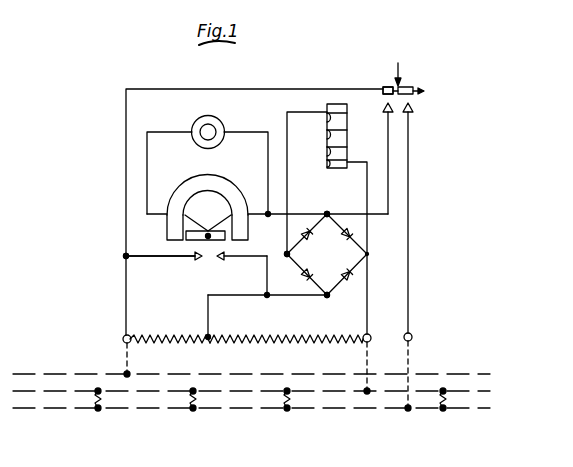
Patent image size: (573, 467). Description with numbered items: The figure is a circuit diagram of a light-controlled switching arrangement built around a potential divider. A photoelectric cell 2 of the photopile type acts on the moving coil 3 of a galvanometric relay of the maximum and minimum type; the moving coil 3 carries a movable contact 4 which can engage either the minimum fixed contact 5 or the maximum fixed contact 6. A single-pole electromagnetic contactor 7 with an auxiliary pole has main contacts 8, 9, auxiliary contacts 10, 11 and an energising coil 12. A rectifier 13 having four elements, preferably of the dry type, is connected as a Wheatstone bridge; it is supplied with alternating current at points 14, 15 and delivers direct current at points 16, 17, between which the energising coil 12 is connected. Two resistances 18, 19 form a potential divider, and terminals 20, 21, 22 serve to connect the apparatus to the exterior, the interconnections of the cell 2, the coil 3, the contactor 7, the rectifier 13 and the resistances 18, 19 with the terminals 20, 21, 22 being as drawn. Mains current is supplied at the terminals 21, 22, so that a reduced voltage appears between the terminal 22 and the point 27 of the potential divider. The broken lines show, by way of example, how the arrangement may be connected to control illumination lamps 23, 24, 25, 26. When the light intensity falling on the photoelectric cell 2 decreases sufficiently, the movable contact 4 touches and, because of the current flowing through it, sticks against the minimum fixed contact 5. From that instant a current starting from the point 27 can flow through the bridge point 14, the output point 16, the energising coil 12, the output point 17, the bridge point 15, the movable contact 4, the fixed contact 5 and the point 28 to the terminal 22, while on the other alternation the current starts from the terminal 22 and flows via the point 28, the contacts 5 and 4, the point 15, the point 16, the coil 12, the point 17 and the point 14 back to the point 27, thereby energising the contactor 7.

The photoelectric cell 2 is at (210, 128).
The moving coil 3 is at (203, 210).
The movable contact 4 is at (207, 240).
The minimum fixed contact 5 is at (196, 259).
The maximum fixed contact 6 is at (222, 259).
The single-pole electromagnetic contactor 7 is at (398, 66).
The main contact 8 is at (412, 88).
The main contact 9 is at (410, 114).
The auxiliary contact 10 is at (387, 88).
The auxiliary contact 11 is at (379, 158).
The energising coil 12 is at (335, 168).
The rectifier 13 is at (326, 255).
The A.C. supply point of the bridge 14 is at (330, 296).
The A.C. supply point of the bridge 15 is at (327, 214).
The D.C. output point of the bridge 16 is at (287, 258).
The D.C. output point of the bridge 17 is at (367, 254).
The resistance 18 is at (284, 353).
The resistance 19 is at (168, 345).
The terminal 20 is at (412, 335).
The terminal 21 is at (370, 335).
The terminal 22 is at (123, 338).
The illumination lamp 23 is at (97, 411).
The illumination lamp 24 is at (191, 411).
The illumination lamp 25 is at (290, 401).
The illumination lamp 26 is at (446, 401).
The point of the potential divider 27 is at (211, 334).
The circuit point 28 is at (123, 257).